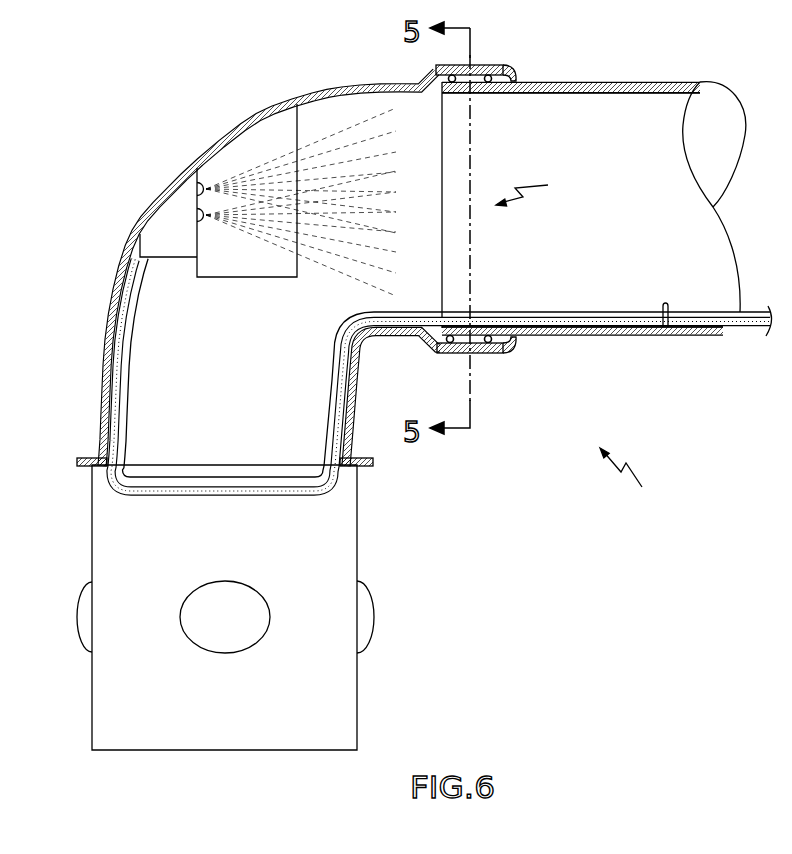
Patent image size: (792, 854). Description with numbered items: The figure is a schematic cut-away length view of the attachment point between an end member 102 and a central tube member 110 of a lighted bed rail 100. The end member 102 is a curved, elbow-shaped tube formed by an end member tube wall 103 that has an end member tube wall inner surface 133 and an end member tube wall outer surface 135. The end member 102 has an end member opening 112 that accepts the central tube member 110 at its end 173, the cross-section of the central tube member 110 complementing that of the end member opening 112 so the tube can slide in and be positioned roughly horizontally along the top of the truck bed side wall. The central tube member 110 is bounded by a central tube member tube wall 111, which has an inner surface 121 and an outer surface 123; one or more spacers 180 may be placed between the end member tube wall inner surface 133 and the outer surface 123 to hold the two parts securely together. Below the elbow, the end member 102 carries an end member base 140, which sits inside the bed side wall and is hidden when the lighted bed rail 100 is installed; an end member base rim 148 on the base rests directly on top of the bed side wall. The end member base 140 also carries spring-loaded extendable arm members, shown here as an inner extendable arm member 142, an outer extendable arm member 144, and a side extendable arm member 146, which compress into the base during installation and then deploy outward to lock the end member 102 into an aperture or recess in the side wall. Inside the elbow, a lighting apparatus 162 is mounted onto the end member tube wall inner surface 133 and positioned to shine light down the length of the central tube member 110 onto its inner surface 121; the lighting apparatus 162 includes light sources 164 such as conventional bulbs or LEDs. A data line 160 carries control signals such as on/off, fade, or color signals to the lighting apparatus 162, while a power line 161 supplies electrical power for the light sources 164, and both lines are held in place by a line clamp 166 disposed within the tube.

The lighted bed rail 100 is at (407, 394).
The end member 102 is at (241, 290).
The end member tube wall 103 is at (104, 366).
The central tube member 110 is at (580, 212).
The central tube member tube wall 111 is at (683, 82).
The end member opening 112 is at (541, 191).
The inner surface of the tube wall 121 is at (601, 93).
The outer surface of the central tube member tube wall 123 is at (576, 82).
The end member tube wall inner surface 133 is at (122, 330).
The end member tube wall outer surface 135 is at (112, 296).
The end member base 140 is at (239, 607).
The inner extendable arm member 142 is at (375, 604).
The outer extendable arm member 144 is at (85, 583).
The side extendable arm member 146 is at (224, 581).
The end member base rim 148 is at (87, 466).
The data line 160 is at (548, 321).
The power line 161 is at (581, 315).
The lighting apparatus 162 is at (167, 221).
The light source 164 is at (195, 190).
The line clamp 166 is at (666, 303).
The end of the central tube member 173 is at (441, 183).
The spacer 180 is at (438, 70).